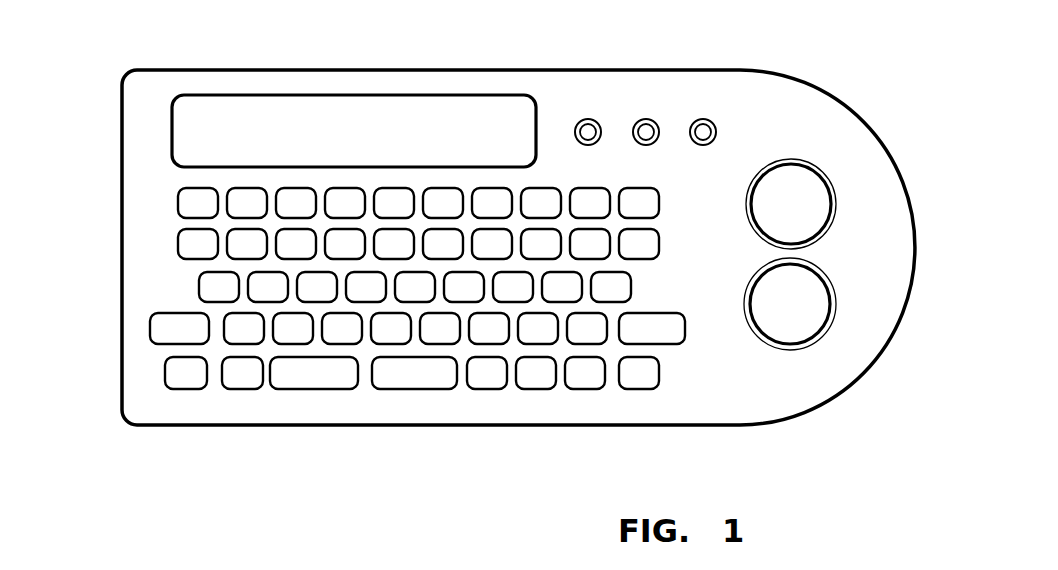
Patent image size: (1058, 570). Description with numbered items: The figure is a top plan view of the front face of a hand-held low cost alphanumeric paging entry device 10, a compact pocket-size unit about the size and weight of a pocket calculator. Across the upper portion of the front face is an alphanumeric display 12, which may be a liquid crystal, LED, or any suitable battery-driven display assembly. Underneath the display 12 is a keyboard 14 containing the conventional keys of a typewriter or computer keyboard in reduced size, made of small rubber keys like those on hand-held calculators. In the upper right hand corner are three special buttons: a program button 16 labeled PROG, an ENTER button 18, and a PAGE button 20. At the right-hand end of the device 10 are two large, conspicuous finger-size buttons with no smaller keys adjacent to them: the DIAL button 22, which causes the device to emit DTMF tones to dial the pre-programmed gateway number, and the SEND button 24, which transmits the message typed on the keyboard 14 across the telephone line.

The low cost alphanumeric paging entry device 10 is at (304, 433).
The alphanumeric display 12 is at (247, 93).
The keyboard 14 is at (155, 373).
The program button 16 is at (577, 143).
The ENTER button 18 is at (632, 143).
The PAGE button 20 is at (703, 147).
The DIAL button 22 is at (838, 175).
The SEND button 24 is at (843, 322).